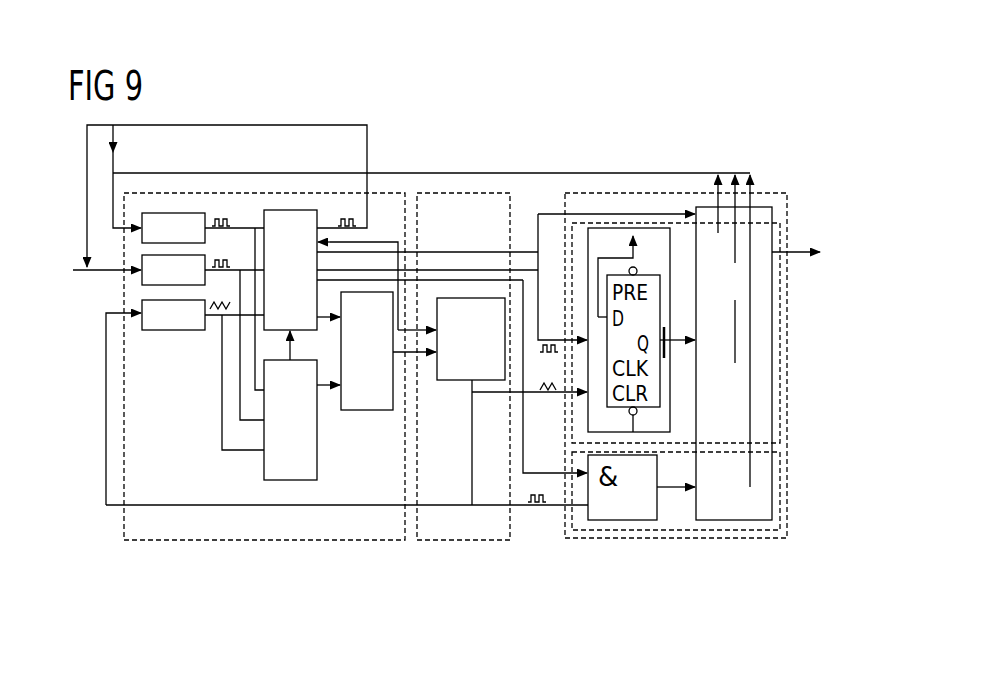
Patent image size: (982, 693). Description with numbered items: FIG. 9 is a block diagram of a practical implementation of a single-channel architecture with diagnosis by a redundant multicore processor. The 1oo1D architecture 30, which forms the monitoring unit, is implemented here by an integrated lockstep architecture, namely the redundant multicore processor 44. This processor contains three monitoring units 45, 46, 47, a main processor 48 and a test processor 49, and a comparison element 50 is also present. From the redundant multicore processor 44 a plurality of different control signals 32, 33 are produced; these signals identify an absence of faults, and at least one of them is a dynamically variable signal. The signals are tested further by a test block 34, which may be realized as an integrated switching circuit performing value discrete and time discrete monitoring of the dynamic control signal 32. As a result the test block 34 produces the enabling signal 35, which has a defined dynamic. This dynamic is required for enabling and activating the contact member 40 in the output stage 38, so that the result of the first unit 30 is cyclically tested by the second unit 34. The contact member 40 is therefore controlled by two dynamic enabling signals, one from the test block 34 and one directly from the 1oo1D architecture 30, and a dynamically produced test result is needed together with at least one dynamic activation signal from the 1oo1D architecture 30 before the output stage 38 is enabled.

The 1oo1D architecture 30 is at (372, 192).
The control signal 32 is at (380, 237).
The control signal 33 is at (410, 358).
The test block 34 is at (470, 542).
The enabling signal 35 is at (115, 508).
The output stage 38 is at (602, 193).
The contact member 40 is at (707, 206).
The redundant multicore processor 44 is at (228, 542).
The monitoring unit 45 is at (170, 213).
The monitoring unit 46 is at (142, 281).
The monitoring unit 47 is at (142, 322).
The main processor 48 is at (290, 210).
The test processor 49 is at (297, 482).
The comparison element 50 is at (357, 412).